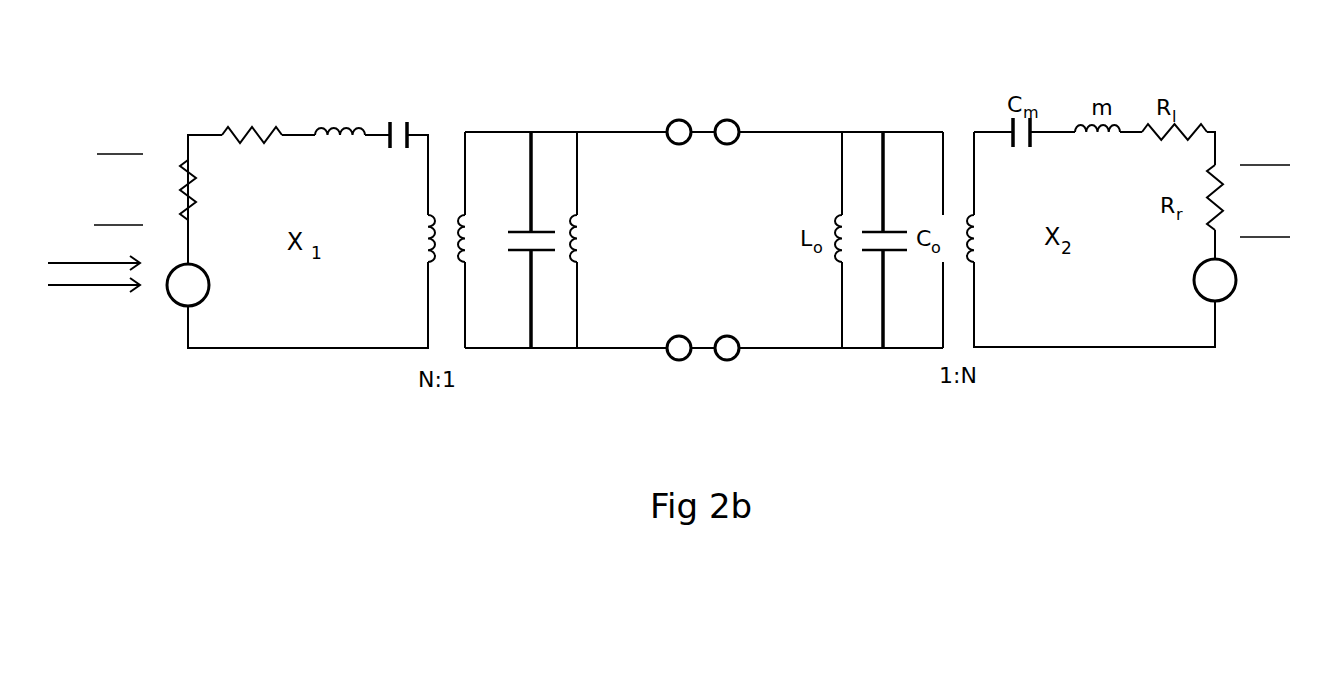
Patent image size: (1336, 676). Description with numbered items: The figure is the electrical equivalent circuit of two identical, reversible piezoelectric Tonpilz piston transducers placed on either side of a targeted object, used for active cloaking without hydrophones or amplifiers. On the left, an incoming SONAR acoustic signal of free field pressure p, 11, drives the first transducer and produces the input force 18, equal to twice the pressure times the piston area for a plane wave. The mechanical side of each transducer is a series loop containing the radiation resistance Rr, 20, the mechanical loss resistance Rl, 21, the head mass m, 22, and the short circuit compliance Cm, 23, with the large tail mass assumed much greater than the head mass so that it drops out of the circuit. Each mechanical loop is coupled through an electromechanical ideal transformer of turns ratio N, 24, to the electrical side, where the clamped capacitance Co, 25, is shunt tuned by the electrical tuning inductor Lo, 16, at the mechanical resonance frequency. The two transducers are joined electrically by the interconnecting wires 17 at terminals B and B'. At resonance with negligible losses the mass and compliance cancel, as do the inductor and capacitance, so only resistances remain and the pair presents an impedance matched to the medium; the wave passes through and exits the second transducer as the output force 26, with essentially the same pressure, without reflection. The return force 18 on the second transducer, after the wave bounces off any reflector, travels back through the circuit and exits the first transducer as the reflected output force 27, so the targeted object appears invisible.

The acoustic pressure p 11 is at (92, 225).
The transducer surface F2' 27 is at (120, 177).
The mechanical loss resistance Rl 21 is at (275, 133).
The head mass m 22 is at (357, 122).
The short circuit compliance Cm 23 is at (410, 118).
The radiation resistance Rr 20 is at (195, 188).
The electromechanical ideal transformer turns ratio N 24 is at (418, 373).
The force F2 / input force F1 18 is at (1237, 287).
The clamped capacitance Co 25 is at (513, 227).
The electrical tuning inductor Lo 16 is at (587, 225).
The interconnecting wires 17 is at (750, 135).
The output force F1' 26 is at (1277, 185).